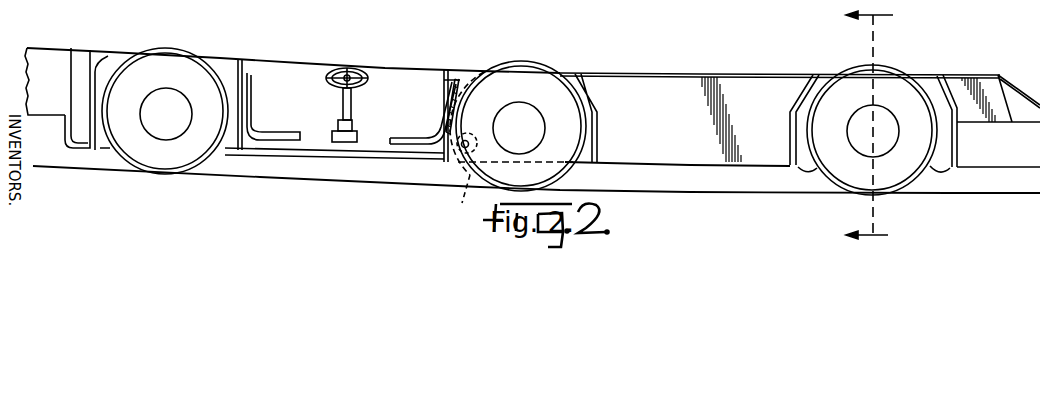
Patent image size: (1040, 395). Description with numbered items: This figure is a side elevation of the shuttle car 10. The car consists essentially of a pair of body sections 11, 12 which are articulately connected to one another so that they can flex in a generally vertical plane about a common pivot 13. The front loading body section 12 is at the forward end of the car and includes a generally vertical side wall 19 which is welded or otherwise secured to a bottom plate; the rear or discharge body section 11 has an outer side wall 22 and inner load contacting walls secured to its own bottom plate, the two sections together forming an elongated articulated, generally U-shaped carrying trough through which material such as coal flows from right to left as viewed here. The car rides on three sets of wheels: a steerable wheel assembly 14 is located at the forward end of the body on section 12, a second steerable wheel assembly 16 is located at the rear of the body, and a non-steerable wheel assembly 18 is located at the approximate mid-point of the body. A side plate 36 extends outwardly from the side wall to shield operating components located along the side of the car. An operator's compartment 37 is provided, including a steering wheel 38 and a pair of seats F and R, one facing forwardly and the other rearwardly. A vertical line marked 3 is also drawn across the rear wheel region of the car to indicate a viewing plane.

The shuttle car 10 is at (688, 31).
The rear or discharge body section 11 is at (297, 52).
The front loading body section 12 is at (731, 65).
The common pivot 13 is at (462, 203).
The steerable wheel assembly 14 is at (940, 189).
The steerable wheel assembly 16 is at (97, 163).
The wheel assembly 18 is at (521, 53).
The side wall 19 is at (707, 145).
The outer side wall 22 is at (390, 80).
The side plate 36 is at (635, 47).
The operator's compartment 37 is at (378, 128).
The steering wheel 38 is at (347, 67).
The seat F is at (259, 92).
The seat R is at (440, 107).
The section line 3- 3 is at (878, 128).